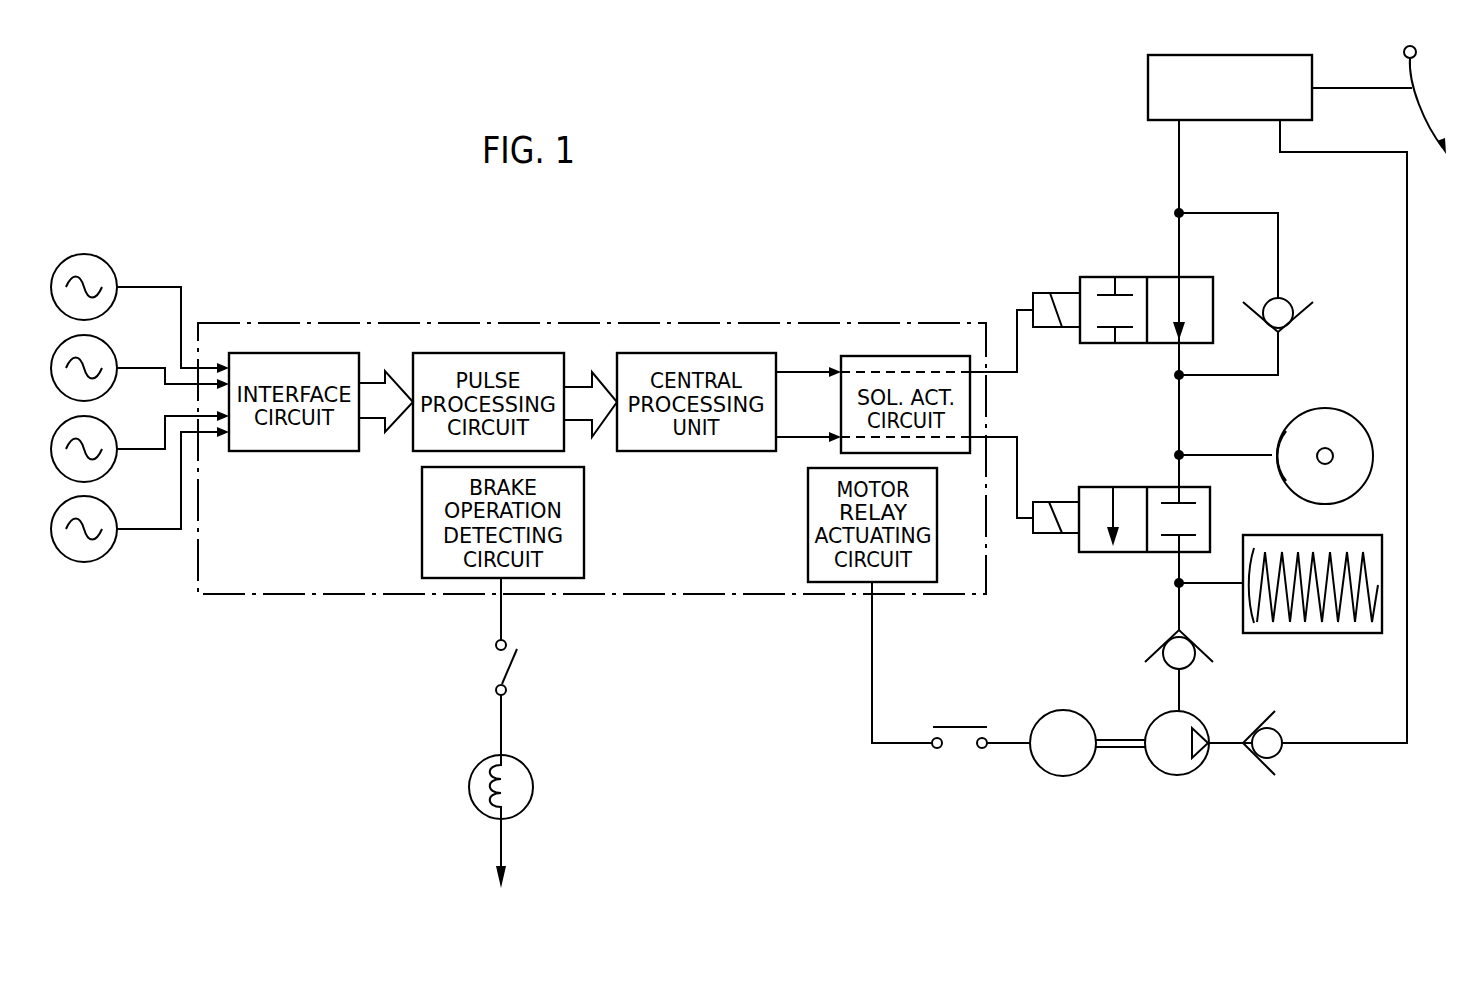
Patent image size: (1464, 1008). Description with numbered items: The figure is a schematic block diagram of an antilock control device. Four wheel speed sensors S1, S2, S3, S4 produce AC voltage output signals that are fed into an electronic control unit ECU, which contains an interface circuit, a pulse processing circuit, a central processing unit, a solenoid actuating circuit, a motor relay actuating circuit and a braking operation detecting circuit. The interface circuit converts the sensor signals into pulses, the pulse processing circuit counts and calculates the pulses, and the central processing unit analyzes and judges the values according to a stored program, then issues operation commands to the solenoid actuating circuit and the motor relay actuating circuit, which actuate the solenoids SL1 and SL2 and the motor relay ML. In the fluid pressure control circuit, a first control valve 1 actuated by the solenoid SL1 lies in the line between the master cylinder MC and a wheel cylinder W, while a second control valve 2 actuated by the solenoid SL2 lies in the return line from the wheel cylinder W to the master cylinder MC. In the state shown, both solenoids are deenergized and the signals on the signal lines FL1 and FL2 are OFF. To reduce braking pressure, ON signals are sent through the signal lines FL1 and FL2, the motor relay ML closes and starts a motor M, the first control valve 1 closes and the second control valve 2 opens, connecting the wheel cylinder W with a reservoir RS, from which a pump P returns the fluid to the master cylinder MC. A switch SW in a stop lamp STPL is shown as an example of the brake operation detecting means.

The wheel speed sensor S1 is at (125, 313).
The wheel speed sensor S2 is at (125, 368).
The wheel speed sensor S3 is at (125, 446).
The wheel speed sensor S4 is at (125, 494).
The electronic control unit ECU is at (480, 322).
The signal line FL1 is at (808, 364).
The signal line FL2 is at (808, 427).
The switch SW is at (522, 667).
The stop lamp STPL is at (528, 787).
The motor relay ML is at (952, 727).
The motor M is at (1063, 743).
The pump P is at (1177, 743).
The master cylinder MC is at (1153, 87).
The first control valve 1 is at (1158, 278).
The second control valve 2 is at (1163, 487).
The solenoid SL1 is at (1062, 293).
The solenoid SL2 is at (1067, 502).
The wheel cylinder W is at (1280, 435).
The reservoir RS is at (1293, 633).